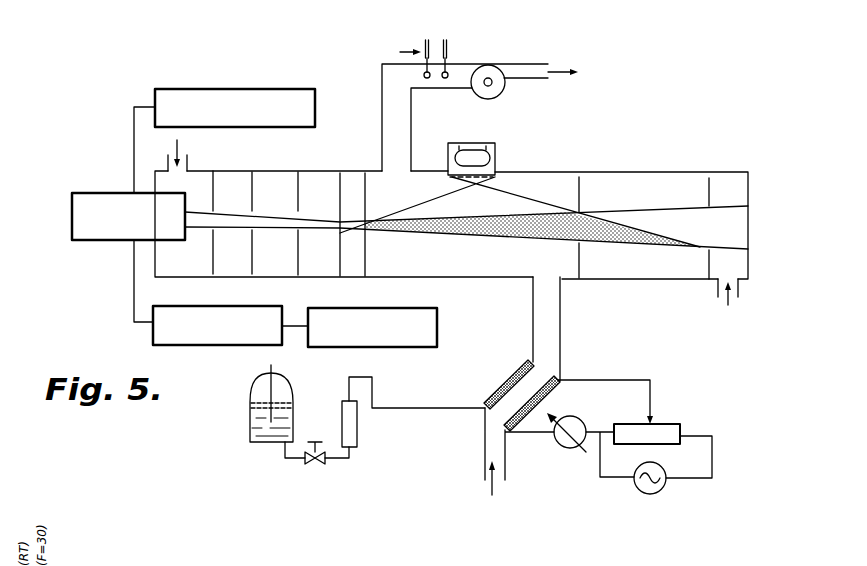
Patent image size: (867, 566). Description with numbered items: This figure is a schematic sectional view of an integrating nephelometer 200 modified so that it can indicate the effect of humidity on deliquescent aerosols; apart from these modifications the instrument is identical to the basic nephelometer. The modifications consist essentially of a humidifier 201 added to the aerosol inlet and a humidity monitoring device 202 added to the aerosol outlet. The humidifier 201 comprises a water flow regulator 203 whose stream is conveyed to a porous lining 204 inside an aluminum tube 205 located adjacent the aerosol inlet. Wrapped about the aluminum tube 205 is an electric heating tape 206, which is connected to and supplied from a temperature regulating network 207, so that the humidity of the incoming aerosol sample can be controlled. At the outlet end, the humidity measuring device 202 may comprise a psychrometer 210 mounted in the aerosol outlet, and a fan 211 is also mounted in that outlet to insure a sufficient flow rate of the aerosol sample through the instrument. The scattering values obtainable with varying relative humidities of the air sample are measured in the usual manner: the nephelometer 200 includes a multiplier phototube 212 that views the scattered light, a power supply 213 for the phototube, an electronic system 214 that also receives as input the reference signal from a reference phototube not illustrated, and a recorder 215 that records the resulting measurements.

The integrating nephelometer 200 is at (730, 176).
The humidifier 201 is at (493, 543).
The humidity monitoring device 202 is at (459, 36).
The water flow regulator 203 is at (338, 489).
The porous lining 204 is at (514, 395).
The aluminum tube 205 is at (528, 364).
The electric heating tape 206 is at (497, 377).
The temperature regulating network 207 is at (626, 509).
The psychrometer 210 is at (392, 49).
The fan 211 is at (492, 70).
The multiplier phototube 212 is at (76, 241).
The power supply 213 is at (264, 89).
The electronic system 214 is at (158, 347).
The recorder 215 is at (350, 347).